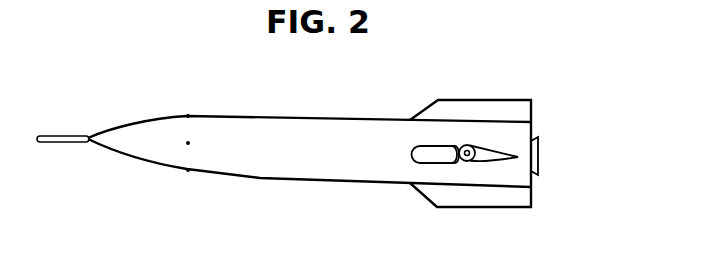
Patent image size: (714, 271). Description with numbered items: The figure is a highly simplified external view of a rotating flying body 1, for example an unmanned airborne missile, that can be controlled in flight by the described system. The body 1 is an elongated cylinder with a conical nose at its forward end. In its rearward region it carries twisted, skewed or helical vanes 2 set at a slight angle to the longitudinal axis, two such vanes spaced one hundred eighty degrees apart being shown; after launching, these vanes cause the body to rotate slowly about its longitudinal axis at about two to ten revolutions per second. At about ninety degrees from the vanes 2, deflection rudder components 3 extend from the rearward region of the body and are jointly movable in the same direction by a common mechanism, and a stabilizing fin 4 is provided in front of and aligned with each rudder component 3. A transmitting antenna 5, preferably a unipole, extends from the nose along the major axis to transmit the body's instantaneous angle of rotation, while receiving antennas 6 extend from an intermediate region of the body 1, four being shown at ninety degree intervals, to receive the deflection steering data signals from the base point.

The flying body 1 is at (318, 166).
The vane 2 is at (494, 108).
The rudder component 3 is at (483, 150).
The stabilizing fin 4 is at (428, 146).
The transmitting antenna 5 is at (63, 135).
The receiving antenna 6 is at (188, 116).